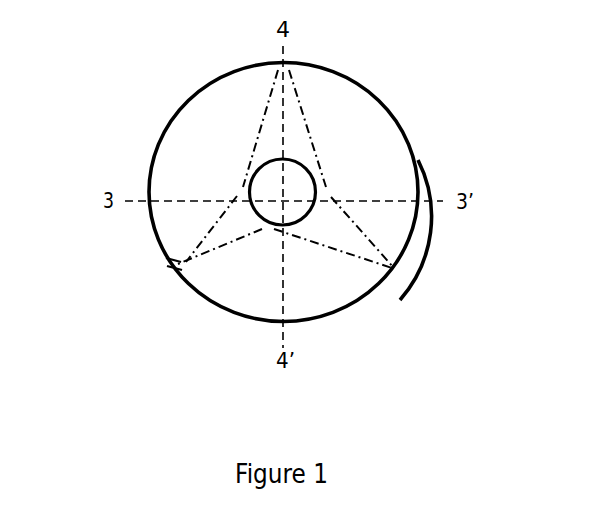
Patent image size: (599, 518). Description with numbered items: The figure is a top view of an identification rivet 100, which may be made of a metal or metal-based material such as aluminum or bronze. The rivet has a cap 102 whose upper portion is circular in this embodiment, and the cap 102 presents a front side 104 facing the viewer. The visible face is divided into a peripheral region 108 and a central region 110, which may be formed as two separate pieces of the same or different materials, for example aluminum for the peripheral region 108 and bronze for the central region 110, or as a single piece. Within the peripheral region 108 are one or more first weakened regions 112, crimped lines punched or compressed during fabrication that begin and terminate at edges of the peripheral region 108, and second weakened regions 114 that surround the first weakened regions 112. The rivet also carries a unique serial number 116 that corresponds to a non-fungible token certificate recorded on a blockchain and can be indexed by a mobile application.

The identification rivet 100 is at (67, 41).
The cap 102 is at (371, 90).
The front side 104 is at (407, 168).
The peripheral region 108 is at (188, 128).
The central region 110 is at (268, 228).
The first weakened region 112 is at (277, 79).
The second weakened region 114 is at (289, 101).
The unique serial number 116 is at (171, 225).